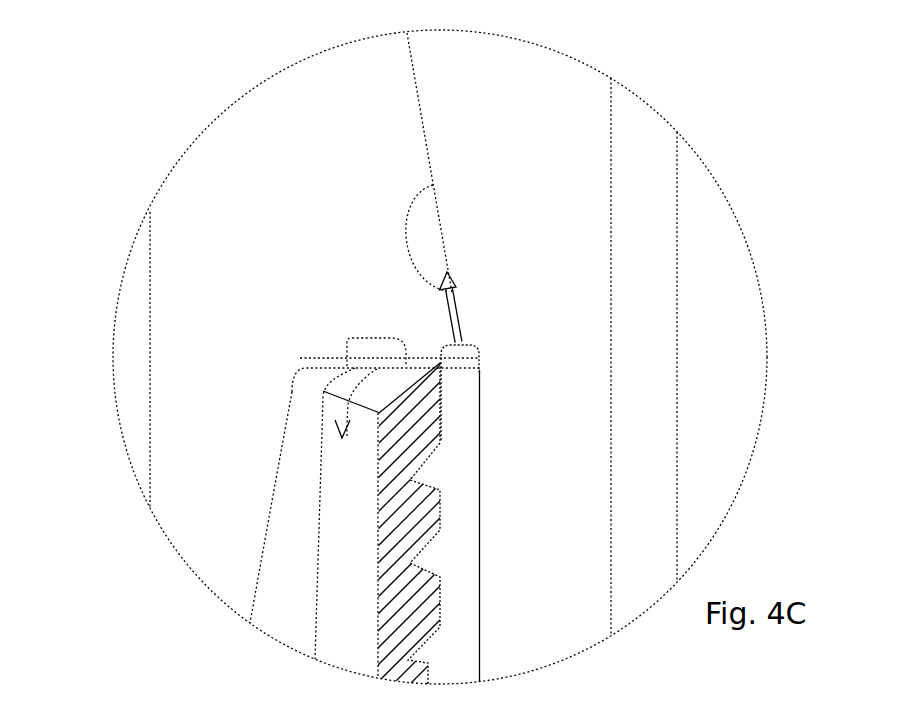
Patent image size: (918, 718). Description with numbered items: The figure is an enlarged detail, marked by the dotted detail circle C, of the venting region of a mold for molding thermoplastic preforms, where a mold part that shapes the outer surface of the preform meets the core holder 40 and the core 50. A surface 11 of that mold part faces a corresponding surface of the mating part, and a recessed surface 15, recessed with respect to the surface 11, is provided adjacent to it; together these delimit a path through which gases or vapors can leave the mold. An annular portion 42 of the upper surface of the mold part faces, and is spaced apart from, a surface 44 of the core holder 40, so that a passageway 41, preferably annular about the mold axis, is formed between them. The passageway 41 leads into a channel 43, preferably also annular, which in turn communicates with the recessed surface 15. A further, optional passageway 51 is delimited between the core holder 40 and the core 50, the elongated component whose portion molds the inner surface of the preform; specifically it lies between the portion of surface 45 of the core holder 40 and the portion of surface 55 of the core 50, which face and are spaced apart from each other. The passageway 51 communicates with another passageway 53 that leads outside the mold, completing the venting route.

The surface 11 is at (397, 592).
The recessed surface 15 is at (348, 535).
The core holder 40 is at (325, 160).
The passageway 41 is at (425, 358).
The portion 42 is at (425, 360).
The channel 43 is at (422, 362).
The surface 44 is at (427, 356).
The surface 45 is at (449, 299).
The core 50 is at (530, 376).
The passageway 51 is at (458, 305).
The passageway 53 is at (426, 247).
The surface 55 is at (460, 330).
The detail circle C is at (748, 478).